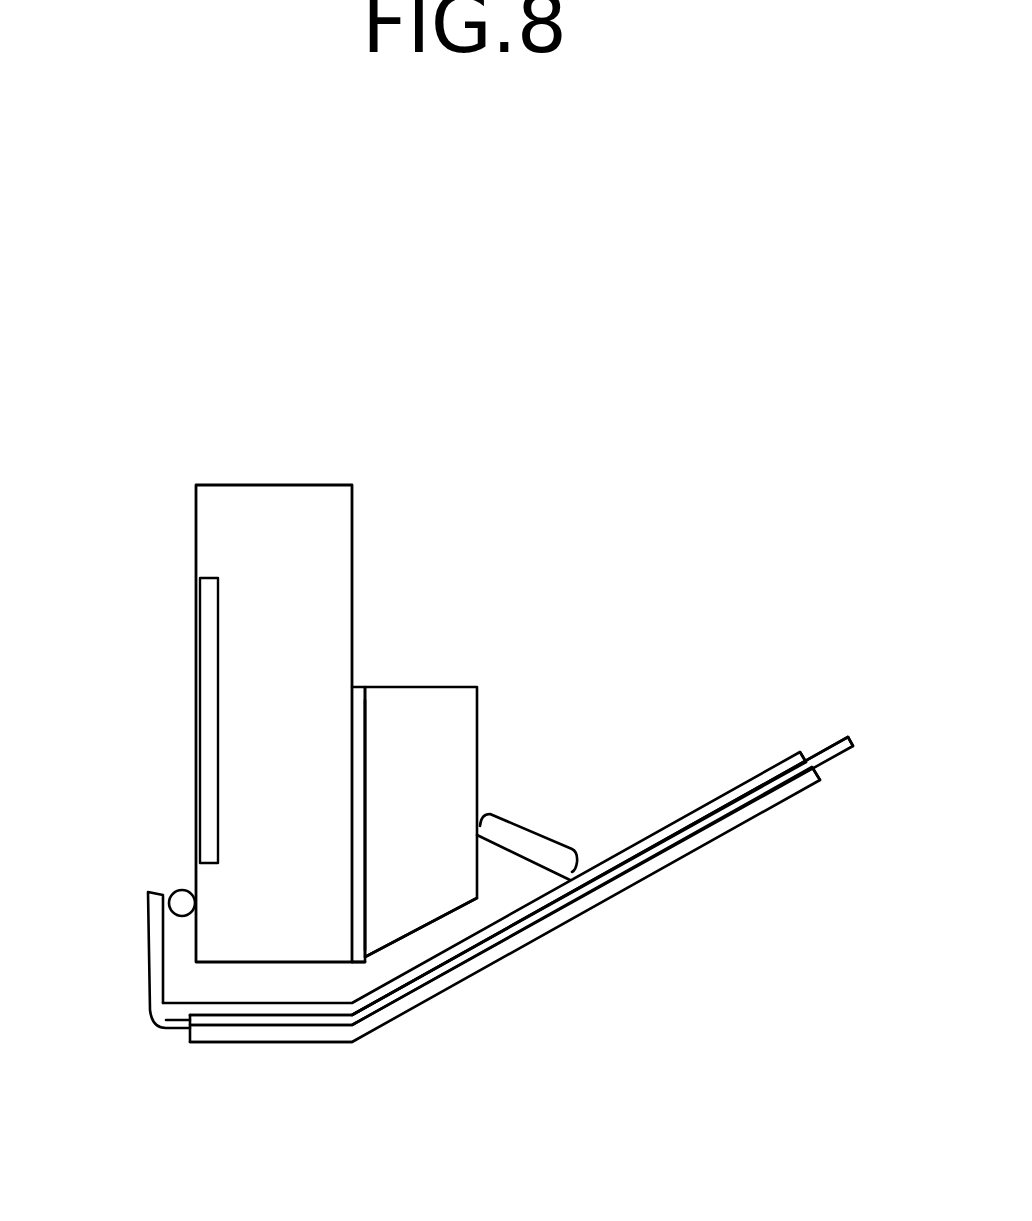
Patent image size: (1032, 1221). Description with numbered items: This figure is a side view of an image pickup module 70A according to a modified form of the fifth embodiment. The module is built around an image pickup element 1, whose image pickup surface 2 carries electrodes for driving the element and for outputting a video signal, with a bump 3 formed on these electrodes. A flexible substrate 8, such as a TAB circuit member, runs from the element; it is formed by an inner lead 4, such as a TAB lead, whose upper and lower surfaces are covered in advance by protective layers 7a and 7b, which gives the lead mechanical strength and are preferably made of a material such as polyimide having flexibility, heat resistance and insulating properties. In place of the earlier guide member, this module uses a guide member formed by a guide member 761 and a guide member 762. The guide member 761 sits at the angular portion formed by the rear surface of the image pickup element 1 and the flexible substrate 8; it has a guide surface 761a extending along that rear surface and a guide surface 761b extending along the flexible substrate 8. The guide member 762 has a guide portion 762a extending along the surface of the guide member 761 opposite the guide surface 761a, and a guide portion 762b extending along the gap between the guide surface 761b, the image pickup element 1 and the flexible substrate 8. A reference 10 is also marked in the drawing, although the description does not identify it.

The image pickup element 1 is at (230, 513).
The image pickup surface 2 is at (195, 658).
The bump 3 is at (185, 893).
The inner lead 4 is at (148, 977).
The gap 10 is at (360, 687).
The image pickup module 70A is at (645, 436).
The guide member 761 is at (452, 685).
The guide surface 761a is at (367, 770).
The guide surface 761b is at (442, 913).
The guide member 762 is at (577, 823).
The guide portion 762a is at (540, 833).
The guide portion 762b is at (598, 917).
The protective layer 7a is at (722, 797).
The protective layer 7b is at (758, 820).
The flexible substrate 8 is at (910, 750).